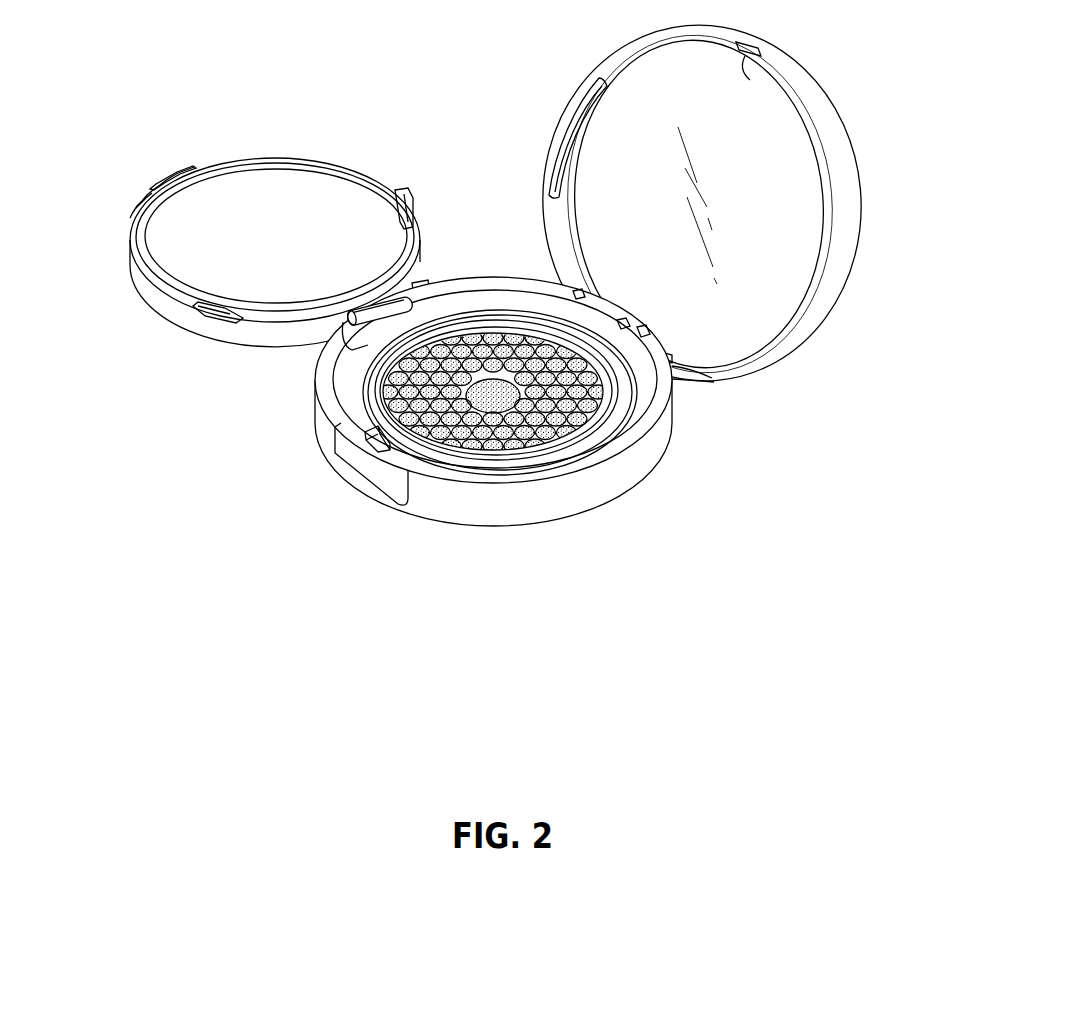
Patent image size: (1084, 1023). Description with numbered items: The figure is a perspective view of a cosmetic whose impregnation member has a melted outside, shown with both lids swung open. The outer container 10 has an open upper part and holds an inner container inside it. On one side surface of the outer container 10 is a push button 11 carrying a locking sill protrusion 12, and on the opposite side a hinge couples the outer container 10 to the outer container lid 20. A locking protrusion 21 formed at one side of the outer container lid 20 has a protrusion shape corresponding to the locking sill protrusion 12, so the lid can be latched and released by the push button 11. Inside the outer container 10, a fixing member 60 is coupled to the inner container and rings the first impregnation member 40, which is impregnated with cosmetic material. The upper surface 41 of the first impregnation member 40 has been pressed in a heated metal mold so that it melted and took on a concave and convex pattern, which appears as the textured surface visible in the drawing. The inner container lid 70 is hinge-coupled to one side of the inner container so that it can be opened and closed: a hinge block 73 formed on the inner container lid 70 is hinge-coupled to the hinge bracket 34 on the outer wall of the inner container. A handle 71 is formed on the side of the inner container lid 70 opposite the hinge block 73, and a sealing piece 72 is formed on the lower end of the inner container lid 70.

The outer container 10 is at (470, 520).
The push button 11 is at (372, 480).
The locking sill protrusion 12 is at (367, 442).
The outer container lid 20 is at (848, 155).
The locking protrusion 21 is at (748, 56).
The hinge bracket 34 is at (345, 336).
The first impregnation member 40 is at (557, 468).
The upper surface 41 is at (510, 455).
The fixing member 60 is at (627, 407).
The inner container lid 70 is at (158, 298).
The handle 71 is at (136, 207).
The sealing piece 72 is at (215, 316).
The hinge block 73 is at (441, 293).